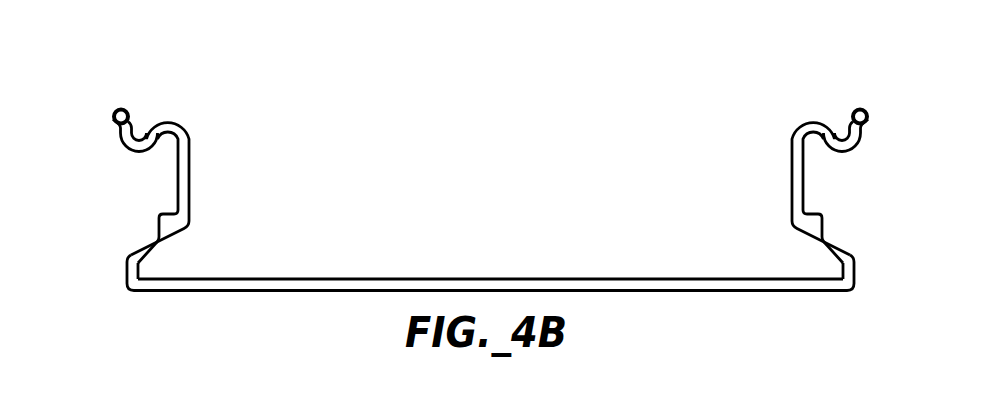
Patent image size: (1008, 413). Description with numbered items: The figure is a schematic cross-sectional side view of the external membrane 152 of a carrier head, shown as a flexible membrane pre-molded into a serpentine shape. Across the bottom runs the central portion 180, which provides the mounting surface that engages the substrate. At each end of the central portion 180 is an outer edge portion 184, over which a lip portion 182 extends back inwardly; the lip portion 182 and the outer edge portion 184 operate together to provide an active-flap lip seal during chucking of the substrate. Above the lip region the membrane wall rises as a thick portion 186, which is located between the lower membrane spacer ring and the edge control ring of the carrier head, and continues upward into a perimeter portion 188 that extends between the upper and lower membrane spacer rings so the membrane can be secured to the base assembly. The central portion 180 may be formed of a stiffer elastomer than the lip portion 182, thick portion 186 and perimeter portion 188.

The external membrane 152 is at (487, 213).
The central portion 180 is at (425, 278).
The lip portion 182 is at (141, 288).
The outer edge portion 184 is at (146, 252).
The thick portion 186 is at (163, 226).
The perimeter portion 188 is at (189, 121).